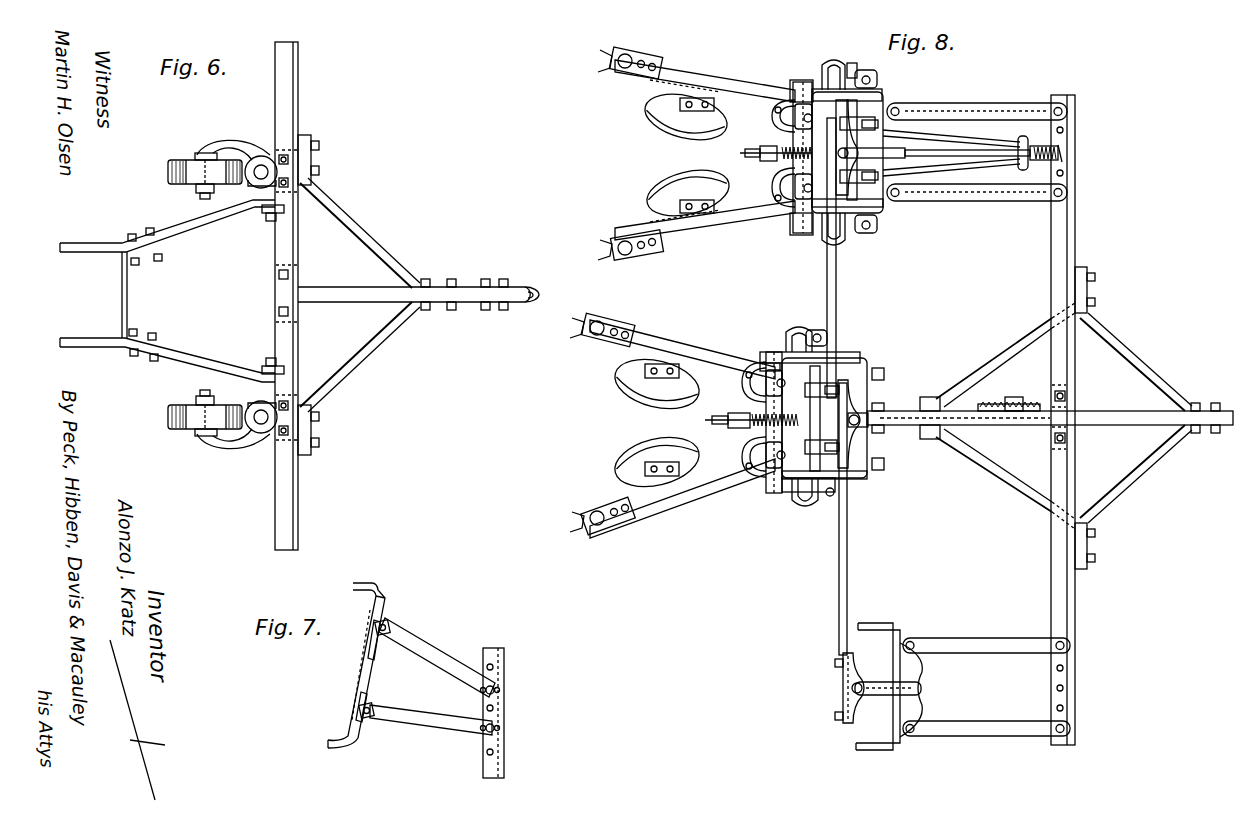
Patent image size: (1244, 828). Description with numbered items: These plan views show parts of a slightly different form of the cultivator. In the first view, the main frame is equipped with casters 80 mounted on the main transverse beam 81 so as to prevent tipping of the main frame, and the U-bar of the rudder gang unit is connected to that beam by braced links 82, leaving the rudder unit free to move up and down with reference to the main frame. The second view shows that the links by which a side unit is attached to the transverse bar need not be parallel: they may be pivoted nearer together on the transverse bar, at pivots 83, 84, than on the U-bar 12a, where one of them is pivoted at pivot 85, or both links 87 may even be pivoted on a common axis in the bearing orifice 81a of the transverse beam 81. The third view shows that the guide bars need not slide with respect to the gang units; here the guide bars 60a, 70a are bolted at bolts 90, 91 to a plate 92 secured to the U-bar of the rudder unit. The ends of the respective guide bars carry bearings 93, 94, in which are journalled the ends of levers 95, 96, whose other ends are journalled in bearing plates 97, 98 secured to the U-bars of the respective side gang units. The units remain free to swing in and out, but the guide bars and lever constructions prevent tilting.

In FIG. 6, the casters 80 is at (185, 180).
In FIG. 6, the main transverse beam 81 is at (280, 486).
In FIG. 7, the main transverse beam 81 is at (488, 760).
In FIG. 7, the bearing orifice 81a is at (494, 707).
In FIG. 6, the braced links 82 is at (240, 210).
In FIG. 7, the pivot 83 is at (495, 686).
In FIG. 7, the pivot 84 is at (497, 727).
In FIG. 7, the pivot 85 is at (387, 622).
In FIG. 7, the links 87 is at (437, 650).
In FIG. 7, the U-bar 12a is at (355, 750).
In FIG. 8, the guide bar 60a is at (849, 560).
In FIG. 8, the guide bar 70a is at (838, 298).
In FIG. 8, the bolt 90 is at (836, 378).
In FIG. 8, the bolt 91 is at (850, 462).
In FIG. 8, the plate 92 is at (860, 400).
In FIG. 8, the bearing 93 is at (846, 700).
In FIG. 8, the bearing 94 is at (790, 140).
In FIG. 8, the lever 95 is at (884, 696).
In FIG. 8, the lever 96 is at (895, 128).
In FIG. 8, the bearing plate 97 is at (918, 684).
In FIG. 8, the bearing plate 98 is at (908, 130).